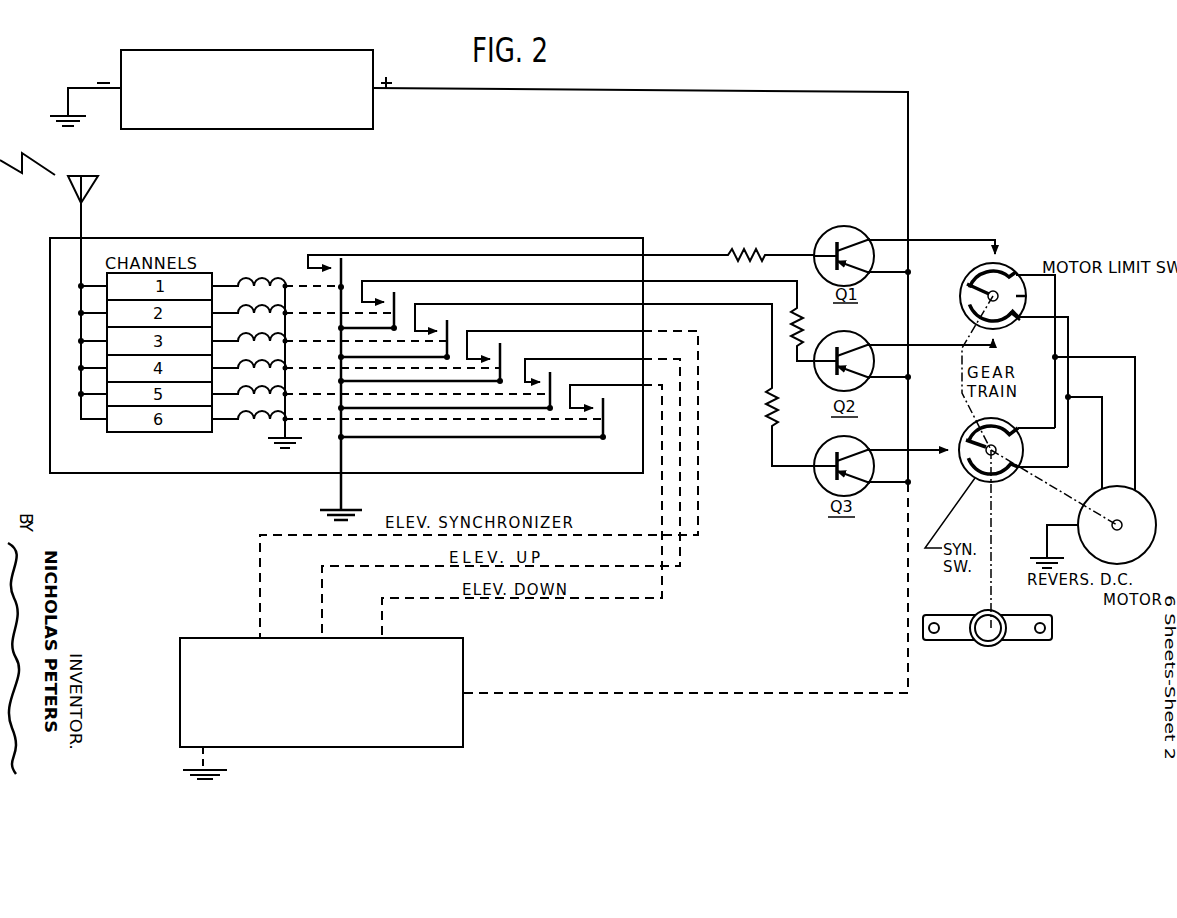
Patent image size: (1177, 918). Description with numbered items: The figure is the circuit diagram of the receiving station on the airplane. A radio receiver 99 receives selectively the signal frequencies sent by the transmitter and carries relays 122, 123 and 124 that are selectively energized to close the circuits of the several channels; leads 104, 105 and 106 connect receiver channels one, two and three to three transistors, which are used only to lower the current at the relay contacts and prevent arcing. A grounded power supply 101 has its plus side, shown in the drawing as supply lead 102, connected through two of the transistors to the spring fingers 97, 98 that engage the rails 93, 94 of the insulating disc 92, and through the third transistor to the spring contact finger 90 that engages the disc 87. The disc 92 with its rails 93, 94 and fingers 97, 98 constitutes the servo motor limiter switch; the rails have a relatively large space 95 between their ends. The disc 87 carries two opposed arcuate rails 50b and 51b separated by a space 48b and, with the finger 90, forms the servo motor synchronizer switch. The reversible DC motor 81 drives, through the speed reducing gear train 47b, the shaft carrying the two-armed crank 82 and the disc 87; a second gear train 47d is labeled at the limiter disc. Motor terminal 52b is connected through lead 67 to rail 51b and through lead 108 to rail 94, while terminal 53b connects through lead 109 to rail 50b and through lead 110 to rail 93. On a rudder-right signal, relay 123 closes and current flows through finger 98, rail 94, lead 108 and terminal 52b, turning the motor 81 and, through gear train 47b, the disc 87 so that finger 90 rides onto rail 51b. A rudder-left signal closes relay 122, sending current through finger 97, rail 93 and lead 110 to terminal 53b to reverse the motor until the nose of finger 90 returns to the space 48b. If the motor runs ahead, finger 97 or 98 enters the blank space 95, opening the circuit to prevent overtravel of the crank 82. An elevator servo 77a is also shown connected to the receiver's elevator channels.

The power supply 101 is at (290, 49).
The positive supply conductor 102 is at (910, 132).
The radio receiver 99 is at (413, 238).
The lead 104 is at (470, 255).
The lead 105 is at (513, 281).
The lead 106 is at (560, 304).
The relay 122 is at (475, 378).
The relay 123 is at (492, 294).
The relay 124 is at (492, 320).
The spring finger 97 is at (1000, 241).
The arcuate rail 93 is at (1012, 272).
The space 95 is at (965, 297).
The disc 92 is at (950, 317).
The arcuate rail 94 is at (1026, 296).
The spring finger 98 is at (998, 337).
The lead 110 is at (1055, 298).
The lead 108 is at (1068, 337).
The motor terminal 53b is at (1058, 356).
The motor terminal 52b is at (1070, 395).
The gear train shaft 47d is at (958, 378).
The arcuate rail 50b is at (997, 427).
The space 48b is at (965, 443).
The lead 109 is at (1055, 408).
The lead 67 is at (1068, 443).
The spring contact finger 90 is at (919, 453).
The disc 87 is at (952, 478).
The arcuate rail 51b is at (1003, 480).
The speed reducing gear train 47b is at (1043, 485).
The reversible DC motor 81 is at (1142, 500).
The two-armed crank 82 is at (1050, 617).
The elevator servo 77a is at (467, 660).